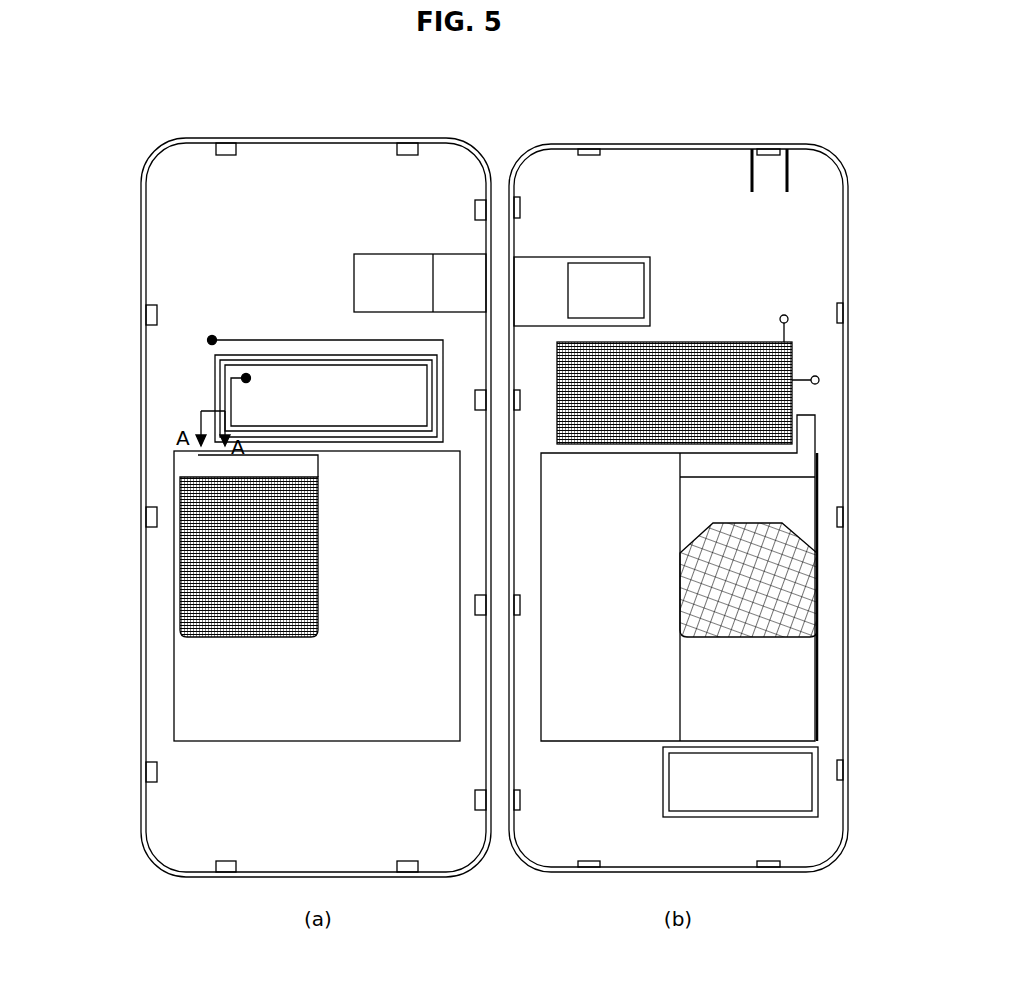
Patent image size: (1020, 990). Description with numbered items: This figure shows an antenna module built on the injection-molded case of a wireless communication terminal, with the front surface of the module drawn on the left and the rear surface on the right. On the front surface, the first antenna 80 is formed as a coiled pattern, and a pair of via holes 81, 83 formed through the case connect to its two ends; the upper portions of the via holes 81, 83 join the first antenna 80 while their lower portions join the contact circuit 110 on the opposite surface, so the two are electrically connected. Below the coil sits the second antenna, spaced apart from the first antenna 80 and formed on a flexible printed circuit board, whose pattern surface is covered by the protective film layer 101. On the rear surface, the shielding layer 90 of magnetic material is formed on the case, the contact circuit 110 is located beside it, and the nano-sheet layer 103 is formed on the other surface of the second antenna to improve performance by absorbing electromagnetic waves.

The first antenna 80 is at (213, 395).
The via hole 81 is at (212, 340).
The via hole 83 is at (246, 378).
The shielding layer 90 is at (766, 371).
The protective film layer 101 is at (195, 575).
The nano-sheet layer 103 is at (797, 583).
The contact circuit 110 is at (785, 328).